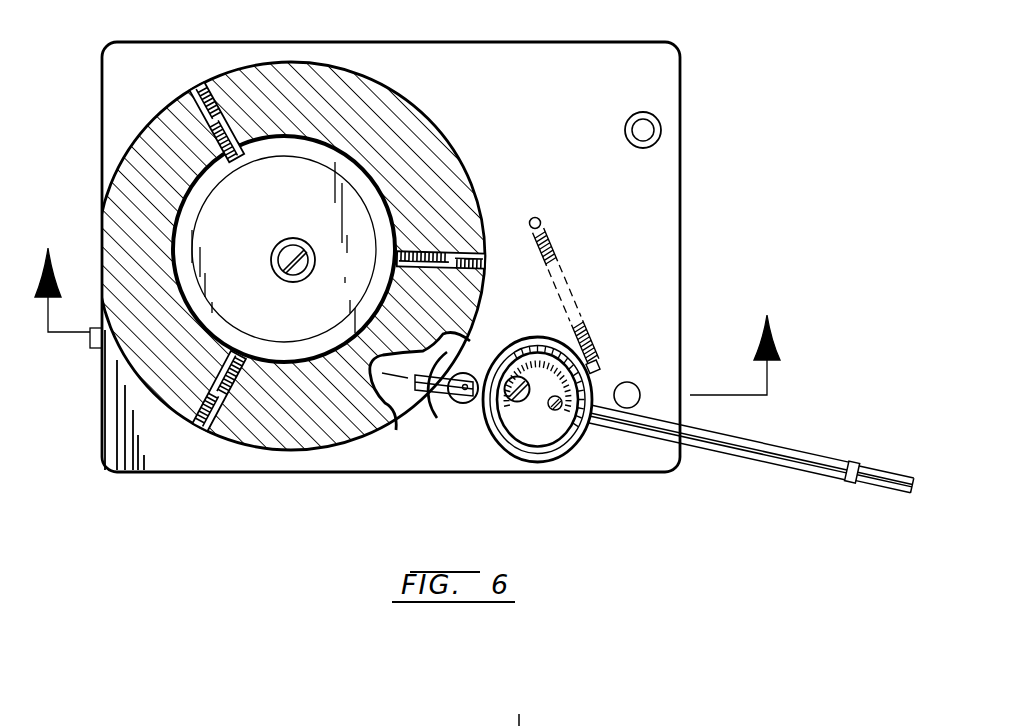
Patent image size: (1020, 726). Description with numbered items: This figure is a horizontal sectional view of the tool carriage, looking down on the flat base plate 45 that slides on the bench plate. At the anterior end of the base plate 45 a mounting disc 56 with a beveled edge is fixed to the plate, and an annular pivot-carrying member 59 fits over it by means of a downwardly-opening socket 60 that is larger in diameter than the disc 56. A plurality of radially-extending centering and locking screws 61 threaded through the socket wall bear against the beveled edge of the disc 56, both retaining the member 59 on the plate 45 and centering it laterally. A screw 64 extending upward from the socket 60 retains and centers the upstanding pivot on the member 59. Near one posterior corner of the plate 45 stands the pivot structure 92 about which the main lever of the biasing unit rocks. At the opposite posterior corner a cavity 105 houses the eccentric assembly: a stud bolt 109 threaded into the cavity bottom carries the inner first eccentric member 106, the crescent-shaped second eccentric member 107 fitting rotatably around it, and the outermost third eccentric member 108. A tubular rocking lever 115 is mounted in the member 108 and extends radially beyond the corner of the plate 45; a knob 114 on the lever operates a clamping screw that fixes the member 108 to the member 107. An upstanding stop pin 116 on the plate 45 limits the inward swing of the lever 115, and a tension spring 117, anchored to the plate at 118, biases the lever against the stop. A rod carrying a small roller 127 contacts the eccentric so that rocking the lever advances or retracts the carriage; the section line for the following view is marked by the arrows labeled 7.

The base plate 45 is at (540, 104).
The pivot-carrying member 59 is at (400, 110).
The socket 60 is at (318, 150).
The mounting disc 56 is at (215, 256).
The screw 64 is at (303, 262).
The centering and locking screws 61 is at (203, 120).
The pivot structure 92 is at (656, 118).
The anchor 118 is at (539, 219).
The tension spring 117 is at (556, 246).
The stop pin 116 is at (626, 384).
The roller 127 is at (468, 402).
The cavity 105 is at (493, 443).
The first eccentric member 106 is at (522, 416).
The second eccentric member 107 is at (538, 436).
The third eccentric member 108 is at (582, 447).
The stud bolt 109 is at (512, 375).
The rocking lever 115 is at (743, 447).
The knob 114 is at (878, 472).
The section line 7 is at (407, 308).